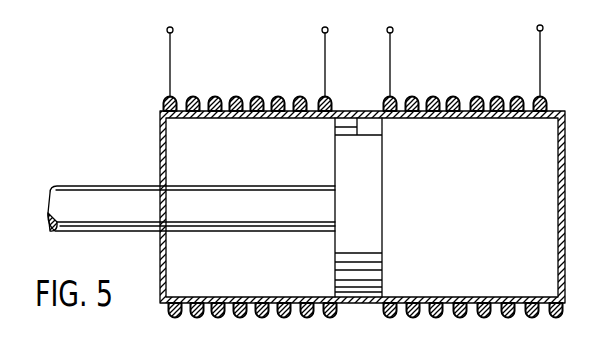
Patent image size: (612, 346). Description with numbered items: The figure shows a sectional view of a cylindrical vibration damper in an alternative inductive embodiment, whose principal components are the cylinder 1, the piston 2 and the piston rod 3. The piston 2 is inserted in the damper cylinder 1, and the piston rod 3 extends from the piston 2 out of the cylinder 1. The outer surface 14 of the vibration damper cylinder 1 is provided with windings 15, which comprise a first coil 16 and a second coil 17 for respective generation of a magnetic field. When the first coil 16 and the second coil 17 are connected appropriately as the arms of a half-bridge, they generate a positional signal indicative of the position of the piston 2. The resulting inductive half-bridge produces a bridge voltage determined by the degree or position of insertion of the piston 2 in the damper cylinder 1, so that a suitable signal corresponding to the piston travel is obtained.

The cylinder 1 is at (457, 97).
The piston 2 is at (358, 113).
The piston rod 3 is at (101, 196).
The outer surface 14 is at (553, 104).
The windings 15 is at (237, 97).
The first coil 16 is at (194, 98).
The second coil 17 is at (496, 98).